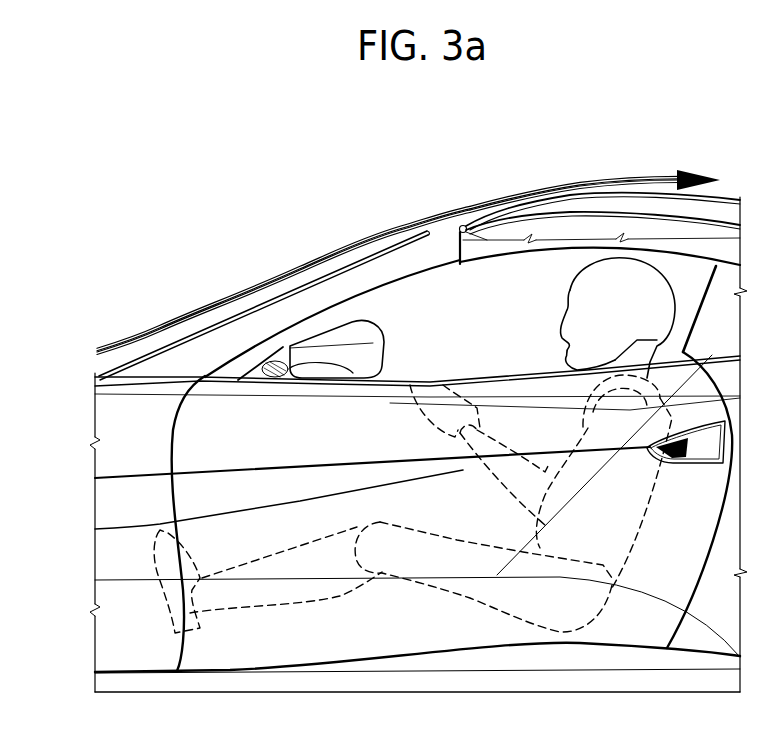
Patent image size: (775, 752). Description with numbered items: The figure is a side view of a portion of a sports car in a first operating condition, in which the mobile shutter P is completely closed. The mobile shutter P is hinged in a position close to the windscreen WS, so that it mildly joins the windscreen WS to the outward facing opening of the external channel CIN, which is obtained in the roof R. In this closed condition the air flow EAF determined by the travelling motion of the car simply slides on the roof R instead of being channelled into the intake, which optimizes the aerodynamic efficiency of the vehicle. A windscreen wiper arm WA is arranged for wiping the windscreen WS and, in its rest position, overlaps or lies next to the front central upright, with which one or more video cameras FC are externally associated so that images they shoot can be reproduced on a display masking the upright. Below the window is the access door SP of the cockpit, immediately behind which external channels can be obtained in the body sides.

The windscreen WS is at (226, 262).
The windscreen wiper arm WA is at (294, 284).
The video camera FC is at (459, 225).
The air flow EAF is at (486, 198).
The mobile shutter P is at (550, 200).
The external channel CIN is at (647, 208).
The roof R is at (728, 200).
The access door SP is at (320, 647).